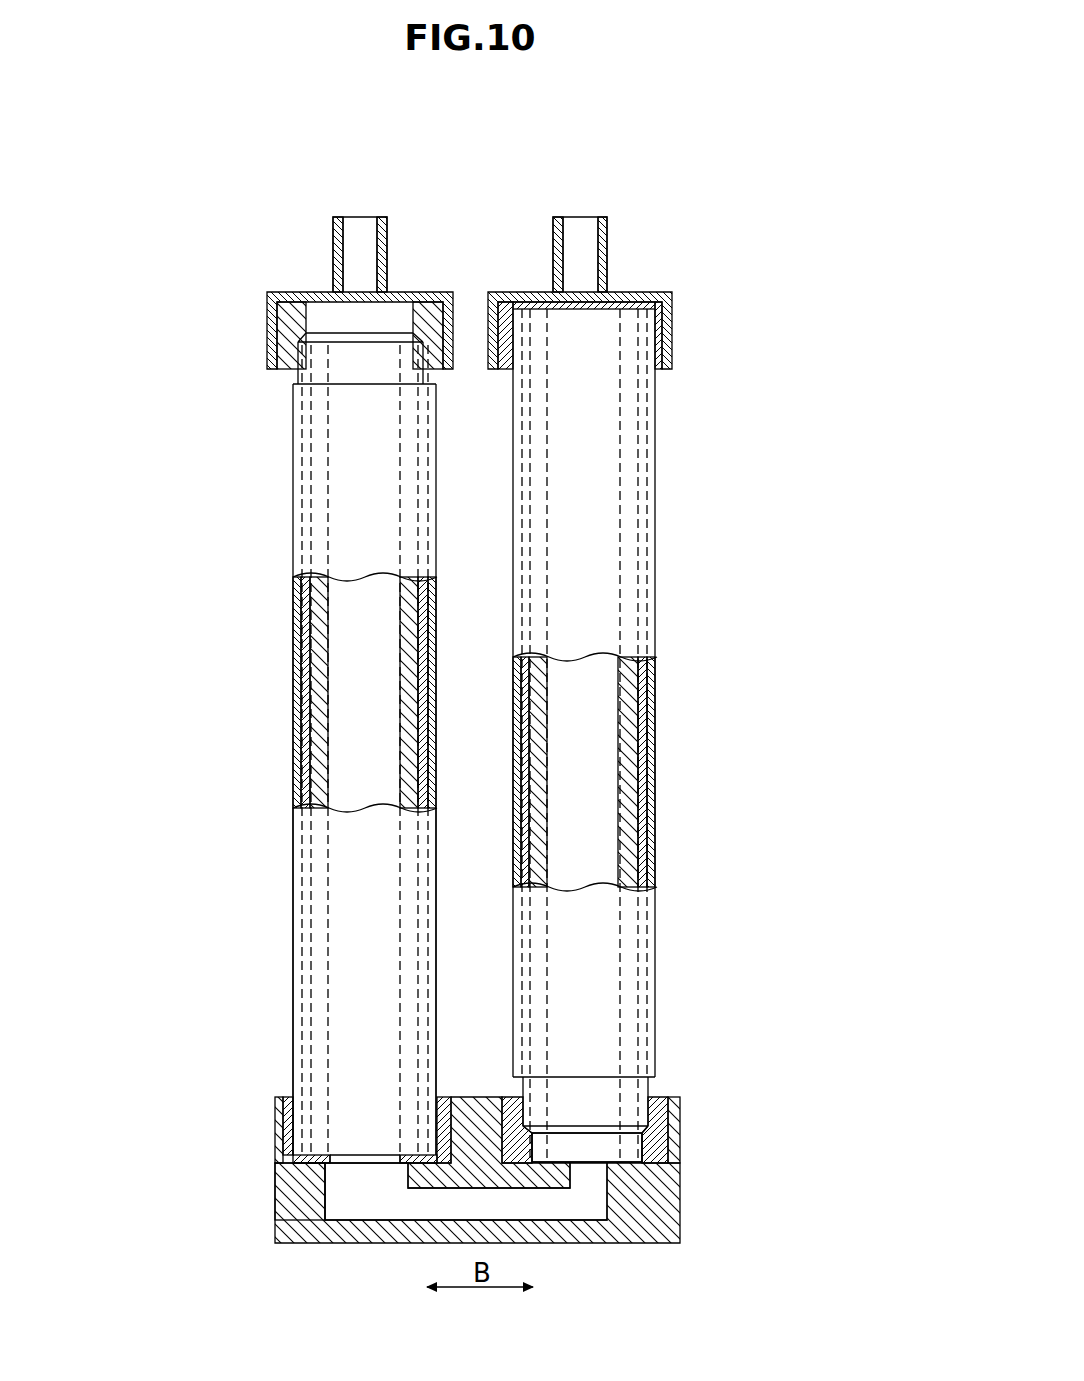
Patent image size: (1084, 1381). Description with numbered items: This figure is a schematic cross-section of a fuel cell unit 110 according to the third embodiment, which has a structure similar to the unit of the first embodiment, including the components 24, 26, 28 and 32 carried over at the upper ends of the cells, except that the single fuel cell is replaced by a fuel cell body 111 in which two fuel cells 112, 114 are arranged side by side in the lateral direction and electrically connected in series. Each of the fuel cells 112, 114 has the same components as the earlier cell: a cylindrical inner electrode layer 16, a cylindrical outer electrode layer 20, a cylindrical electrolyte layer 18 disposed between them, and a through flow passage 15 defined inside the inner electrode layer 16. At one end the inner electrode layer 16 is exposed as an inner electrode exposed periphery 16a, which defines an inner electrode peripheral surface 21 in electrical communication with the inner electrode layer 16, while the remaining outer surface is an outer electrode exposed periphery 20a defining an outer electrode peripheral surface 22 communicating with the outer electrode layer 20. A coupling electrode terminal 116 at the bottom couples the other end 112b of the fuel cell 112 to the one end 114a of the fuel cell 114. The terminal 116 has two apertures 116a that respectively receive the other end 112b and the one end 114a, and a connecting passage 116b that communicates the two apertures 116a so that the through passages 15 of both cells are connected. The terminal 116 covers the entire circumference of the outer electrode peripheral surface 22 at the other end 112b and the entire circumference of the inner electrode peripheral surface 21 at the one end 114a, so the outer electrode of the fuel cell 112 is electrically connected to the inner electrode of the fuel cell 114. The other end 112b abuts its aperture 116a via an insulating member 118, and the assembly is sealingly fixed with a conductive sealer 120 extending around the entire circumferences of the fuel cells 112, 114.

The fuel cell unit 110 is at (764, 184).
The fuel cell body 111 is at (687, 473).
The plunger rod of first syringe 24 is at (332, 242).
The plunger rod of second syringe 26 is at (607, 250).
The inner cap layer 28 is at (631, 296).
The cap 32 is at (288, 297).
The fuel cell 112 is at (292, 517).
The other end of fuel cell 112b is at (273, 1063).
The fuel cell 114 is at (656, 557).
The one end of fuel cell 114a is at (675, 1077).
The through flow passage 15 is at (318, 616).
The inner electrode layer 16 is at (317, 648).
The electrolyte layer 18 is at (302, 705).
The outer electrode layer 20 is at (297, 762).
The outer electrode exposed periphery 20a is at (293, 935).
The outer electrode peripheral surface 22 is at (294, 904).
The inner electrode exposed periphery 16a is at (650, 1153).
The inner electrode peripheral surface 21 is at (682, 1146).
The coupling electrode terminal 116 is at (680, 1190).
The apertures 116a is at (285, 1117).
The connecting passage 116b is at (380, 1212).
The insulating member 118 is at (307, 1170).
The conductive sealer 120 is at (290, 1147).